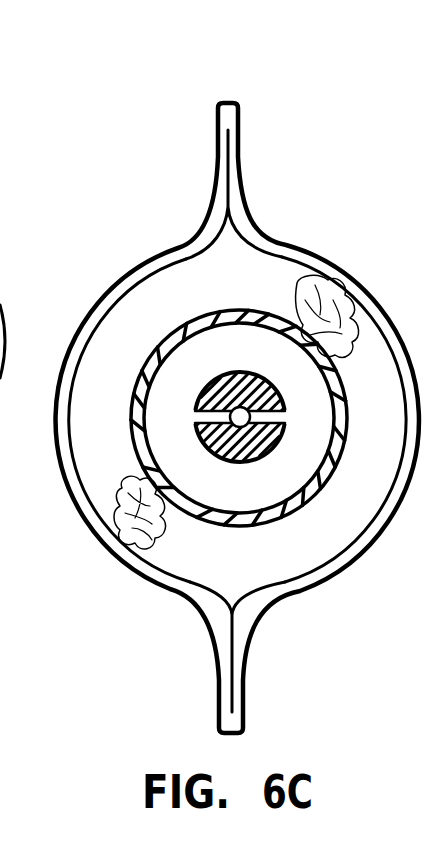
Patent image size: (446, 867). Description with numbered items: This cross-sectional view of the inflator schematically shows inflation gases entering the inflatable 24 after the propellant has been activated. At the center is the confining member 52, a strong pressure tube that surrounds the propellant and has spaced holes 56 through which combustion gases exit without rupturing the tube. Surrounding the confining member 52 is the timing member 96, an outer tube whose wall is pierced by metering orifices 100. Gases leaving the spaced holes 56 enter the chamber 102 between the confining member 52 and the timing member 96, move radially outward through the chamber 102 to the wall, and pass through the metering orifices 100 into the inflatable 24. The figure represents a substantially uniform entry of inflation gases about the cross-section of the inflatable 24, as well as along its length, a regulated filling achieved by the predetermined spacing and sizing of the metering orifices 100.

The inflatable 24 is at (232, 117).
The confining member 52 is at (279, 437).
The spaced holes 56 is at (270, 402).
The timing member 96 is at (150, 360).
The metering orifices 100 is at (299, 315).
The chamber 102 is at (202, 363).